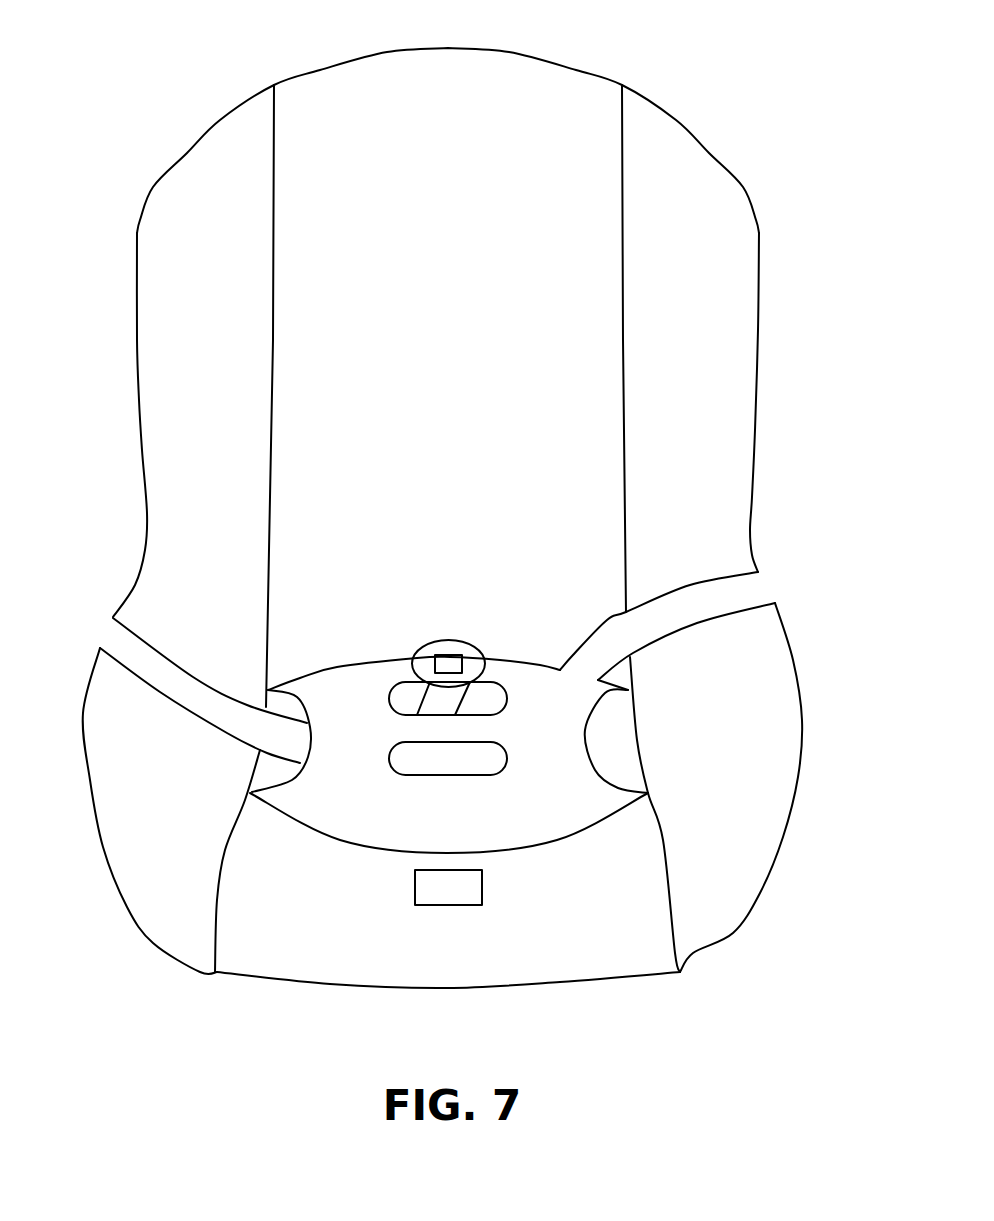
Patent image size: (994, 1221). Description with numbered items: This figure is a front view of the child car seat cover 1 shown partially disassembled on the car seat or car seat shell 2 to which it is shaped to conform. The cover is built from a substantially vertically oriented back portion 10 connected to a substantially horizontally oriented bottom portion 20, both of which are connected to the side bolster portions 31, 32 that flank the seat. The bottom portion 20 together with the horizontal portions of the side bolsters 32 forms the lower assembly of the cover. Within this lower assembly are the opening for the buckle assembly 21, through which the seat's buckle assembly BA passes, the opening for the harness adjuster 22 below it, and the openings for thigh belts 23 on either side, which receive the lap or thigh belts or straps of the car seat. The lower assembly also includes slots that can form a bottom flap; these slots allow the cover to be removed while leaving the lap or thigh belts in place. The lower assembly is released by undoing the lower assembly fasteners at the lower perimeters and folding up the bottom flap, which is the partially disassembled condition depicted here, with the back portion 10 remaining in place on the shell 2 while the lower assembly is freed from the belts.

The child car seat cover 1 is at (578, 98).
The car seat shell 2 is at (123, 375).
The back portion 10 is at (438, 298).
The bottom portion 20 is at (428, 829).
The opening for the buckle assembly 21 is at (497, 717).
The opening for the harness adjuster 22 is at (445, 908).
The openings for thigh belts 23 is at (270, 762).
The side bolster portion 31 is at (212, 200).
The side bolster portion 32 is at (219, 743).
The buckle assembly BA is at (475, 648).